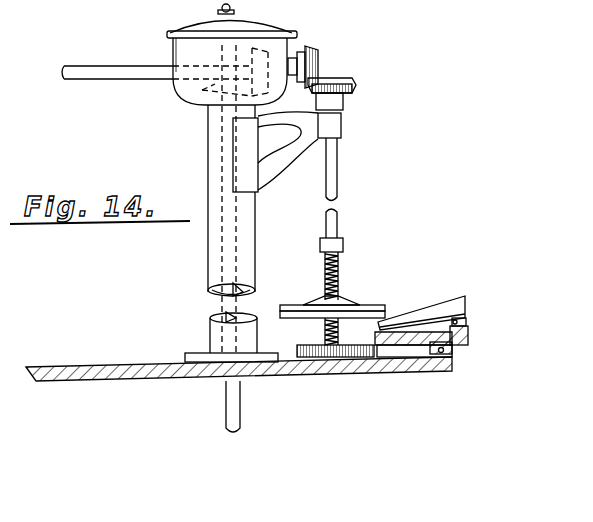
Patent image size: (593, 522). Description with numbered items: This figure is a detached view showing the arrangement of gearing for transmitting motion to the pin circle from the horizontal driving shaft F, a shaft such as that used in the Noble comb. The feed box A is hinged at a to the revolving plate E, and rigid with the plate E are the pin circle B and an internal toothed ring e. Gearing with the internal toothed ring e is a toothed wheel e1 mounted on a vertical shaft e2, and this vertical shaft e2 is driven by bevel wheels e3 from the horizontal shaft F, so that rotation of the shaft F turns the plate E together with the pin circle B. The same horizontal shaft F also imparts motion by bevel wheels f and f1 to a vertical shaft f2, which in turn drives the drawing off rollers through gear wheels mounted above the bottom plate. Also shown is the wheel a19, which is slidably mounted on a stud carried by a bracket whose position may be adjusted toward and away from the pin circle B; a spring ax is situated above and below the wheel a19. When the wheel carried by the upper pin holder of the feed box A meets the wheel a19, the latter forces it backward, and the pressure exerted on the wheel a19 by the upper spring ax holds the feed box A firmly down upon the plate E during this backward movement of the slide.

The horizontal shaft F is at (130, 72).
The bevel wheel f is at (290, 37).
The bevel wheel f1 is at (197, 105).
The vertical shaft f2 is at (228, 404).
The internal toothed ring e is at (387, 367).
The toothed wheel e1 is at (322, 357).
The vertical shaft e2 is at (330, 173).
The bevel wheel e3 is at (327, 78).
The spring ax is at (323, 334).
The wheel a19 is at (336, 313).
The pin circle B is at (380, 322).
The feed box A is at (443, 307).
The hinge a is at (466, 321).
The revolving plate E is at (462, 343).